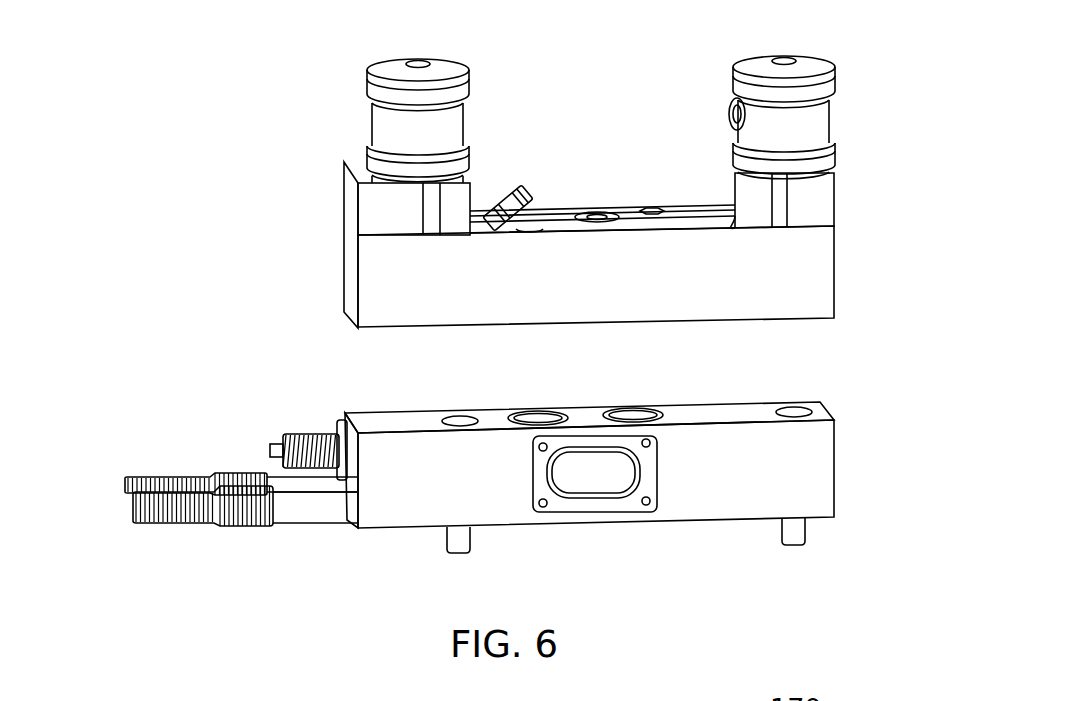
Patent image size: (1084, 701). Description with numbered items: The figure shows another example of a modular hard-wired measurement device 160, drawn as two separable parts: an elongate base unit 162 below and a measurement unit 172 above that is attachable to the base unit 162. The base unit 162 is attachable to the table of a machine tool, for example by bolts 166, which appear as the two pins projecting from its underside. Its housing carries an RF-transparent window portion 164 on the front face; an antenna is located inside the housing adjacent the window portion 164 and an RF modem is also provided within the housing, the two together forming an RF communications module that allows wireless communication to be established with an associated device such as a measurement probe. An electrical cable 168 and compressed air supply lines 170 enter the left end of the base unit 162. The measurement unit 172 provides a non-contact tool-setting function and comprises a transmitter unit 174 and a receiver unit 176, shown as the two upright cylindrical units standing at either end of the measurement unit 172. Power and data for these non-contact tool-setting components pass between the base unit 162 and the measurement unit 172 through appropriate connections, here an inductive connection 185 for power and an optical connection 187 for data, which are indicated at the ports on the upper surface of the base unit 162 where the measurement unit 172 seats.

The modular hard-wired measurement device 160 is at (150, 323).
The base unit 162 is at (864, 467).
The RF-transparent window portion 164 is at (617, 487).
The bolts 166 is at (457, 546).
The electrical cable 168 is at (295, 437).
The compressed air supply lines 170 is at (132, 518).
The measurement unit 172 is at (818, 287).
The transmitter unit 174 is at (442, 70).
The receiver unit 176 is at (808, 63).
The inductive connection 185 is at (537, 416).
The optical connection 187 is at (637, 414).